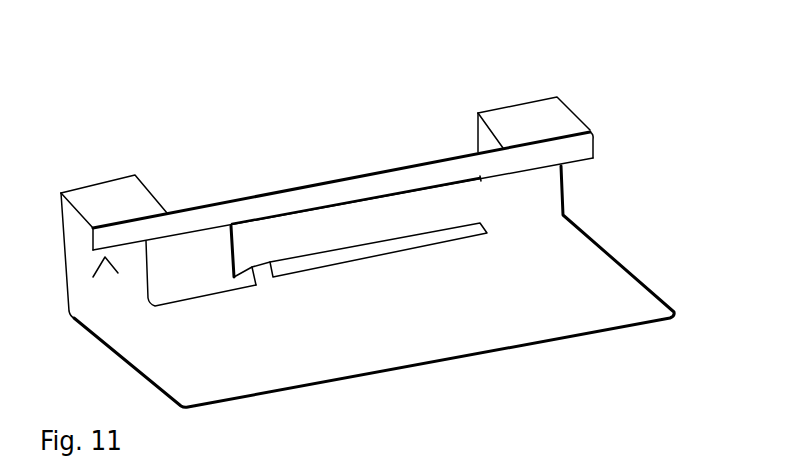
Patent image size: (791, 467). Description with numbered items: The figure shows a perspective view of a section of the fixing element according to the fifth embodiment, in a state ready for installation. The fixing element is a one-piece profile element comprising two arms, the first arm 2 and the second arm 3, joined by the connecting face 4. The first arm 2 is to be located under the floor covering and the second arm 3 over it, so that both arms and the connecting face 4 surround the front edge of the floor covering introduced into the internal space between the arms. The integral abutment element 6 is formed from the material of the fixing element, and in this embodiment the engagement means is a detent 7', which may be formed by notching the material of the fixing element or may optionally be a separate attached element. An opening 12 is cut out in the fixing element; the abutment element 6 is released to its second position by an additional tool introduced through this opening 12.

The first arm 2 is at (547, 280).
The second arm 3 is at (538, 113).
The connecting face 4 is at (504, 170).
The abutment element 6 is at (372, 220).
The detent 7' is at (278, 298).
The opening 12 is at (187, 273).